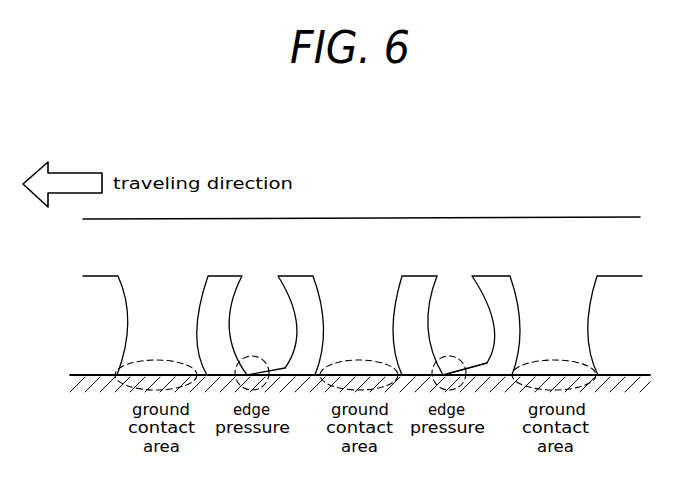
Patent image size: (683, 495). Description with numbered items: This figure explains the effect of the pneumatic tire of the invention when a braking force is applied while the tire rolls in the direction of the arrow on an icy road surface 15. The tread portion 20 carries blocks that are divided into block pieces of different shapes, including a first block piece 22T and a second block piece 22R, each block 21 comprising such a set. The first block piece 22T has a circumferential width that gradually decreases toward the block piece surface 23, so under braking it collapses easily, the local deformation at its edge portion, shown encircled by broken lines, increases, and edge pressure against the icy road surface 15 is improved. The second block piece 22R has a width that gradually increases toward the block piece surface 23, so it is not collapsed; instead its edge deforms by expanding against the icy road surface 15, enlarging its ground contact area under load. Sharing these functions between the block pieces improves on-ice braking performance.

The tread portion 20 is at (549, 206).
The block 21 is at (493, 287).
The first block piece 22T is at (453, 290).
The second block piece 22R is at (565, 303).
The icy road surface 15 is at (620, 373).
The block piece surface 23 is at (478, 372).